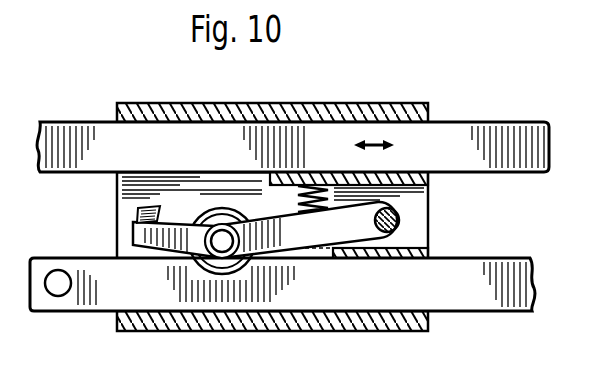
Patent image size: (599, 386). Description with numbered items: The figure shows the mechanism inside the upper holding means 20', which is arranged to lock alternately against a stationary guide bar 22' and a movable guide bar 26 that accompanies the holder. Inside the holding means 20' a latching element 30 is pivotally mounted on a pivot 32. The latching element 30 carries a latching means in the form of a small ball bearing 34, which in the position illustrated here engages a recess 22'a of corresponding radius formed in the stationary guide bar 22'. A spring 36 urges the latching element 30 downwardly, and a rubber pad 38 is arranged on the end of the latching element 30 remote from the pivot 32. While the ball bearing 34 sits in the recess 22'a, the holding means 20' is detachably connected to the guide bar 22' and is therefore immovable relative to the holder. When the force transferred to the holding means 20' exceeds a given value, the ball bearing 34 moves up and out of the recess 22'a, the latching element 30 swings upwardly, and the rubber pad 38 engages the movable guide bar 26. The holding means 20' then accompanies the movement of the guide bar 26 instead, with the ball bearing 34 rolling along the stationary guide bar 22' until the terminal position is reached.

The upper holding means 20' is at (280, 192).
The movable guide bar 26 is at (438, 140).
The stationary guide bar 22' is at (282, 307).
The recess 22'a is at (204, 288).
The latching element 30 is at (273, 236).
The pivot 32 is at (410, 220).
The ball bearing 34 is at (223, 216).
The spring 36 is at (297, 203).
The rubber pad 38 is at (137, 209).